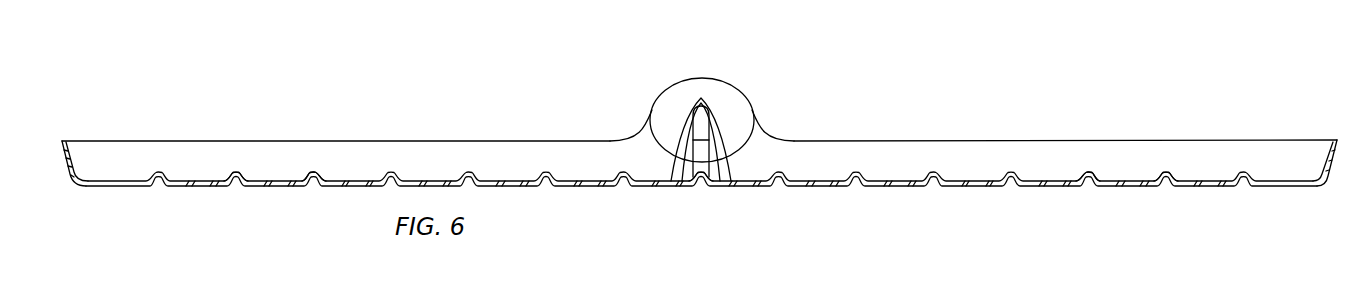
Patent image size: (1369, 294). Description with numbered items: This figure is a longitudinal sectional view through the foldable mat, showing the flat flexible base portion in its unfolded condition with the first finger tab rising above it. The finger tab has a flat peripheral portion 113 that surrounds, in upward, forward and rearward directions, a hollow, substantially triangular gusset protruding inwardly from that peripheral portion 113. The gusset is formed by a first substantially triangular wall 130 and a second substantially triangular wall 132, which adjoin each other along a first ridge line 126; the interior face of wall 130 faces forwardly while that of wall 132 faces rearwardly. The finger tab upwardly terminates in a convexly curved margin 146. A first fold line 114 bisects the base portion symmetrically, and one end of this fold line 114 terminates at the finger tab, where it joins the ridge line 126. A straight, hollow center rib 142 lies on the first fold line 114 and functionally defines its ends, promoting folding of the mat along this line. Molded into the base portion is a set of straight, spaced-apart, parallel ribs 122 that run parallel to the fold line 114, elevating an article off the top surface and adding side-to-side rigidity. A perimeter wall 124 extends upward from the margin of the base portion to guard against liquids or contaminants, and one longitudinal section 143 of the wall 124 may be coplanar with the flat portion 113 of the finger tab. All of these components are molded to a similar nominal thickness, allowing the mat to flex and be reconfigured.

The peripheral portion 113 is at (725, 102).
The first fold line 114 is at (702, 182).
The ribs 122 is at (236, 186).
The perimeter wall 124 is at (75, 157).
The first ridge line 126 is at (699, 105).
The first substantially triangular wall 130 is at (685, 160).
The second substantially triangular wall 132 is at (717, 160).
The center rib 142 is at (695, 182).
The longitudinal section 143 is at (1108, 157).
The convexly curved margin 146 is at (668, 91).